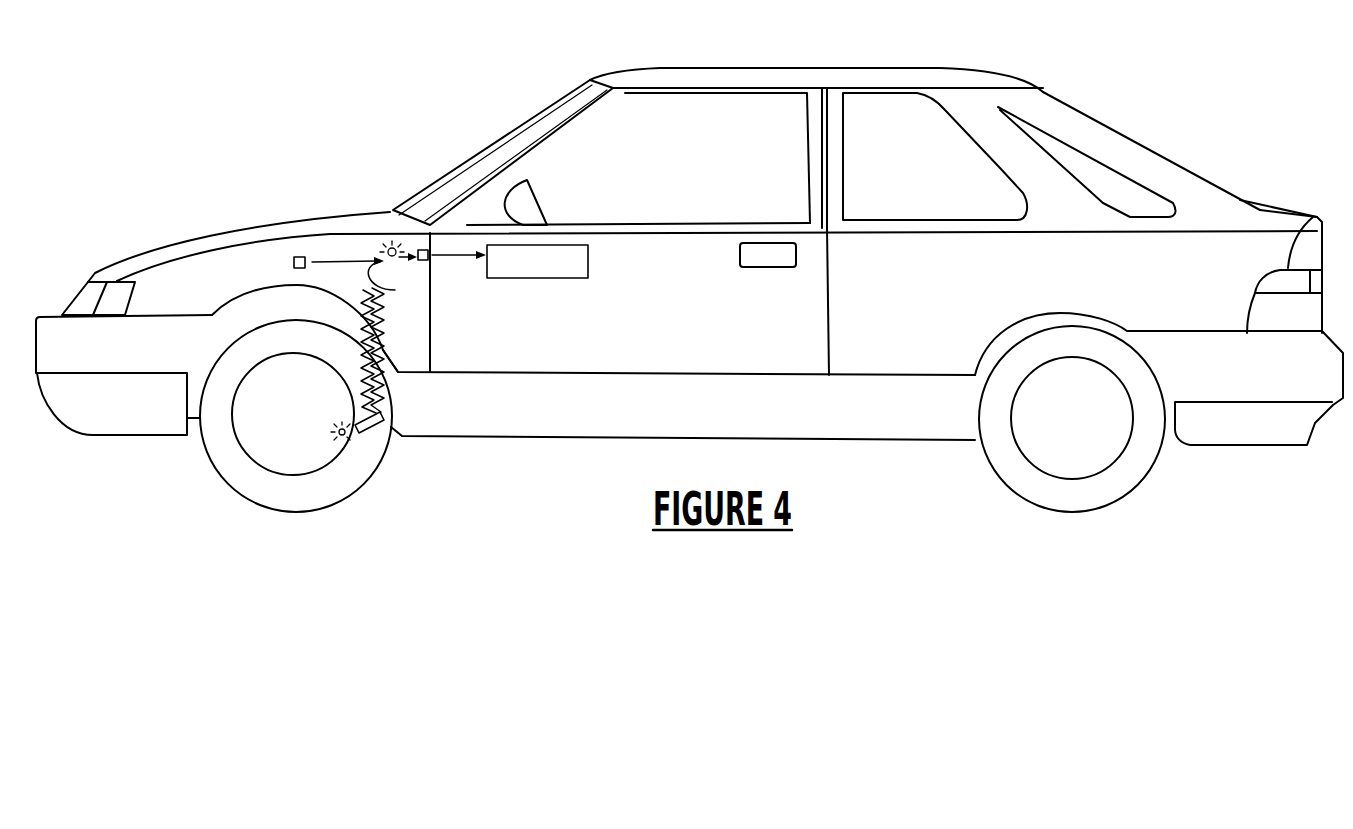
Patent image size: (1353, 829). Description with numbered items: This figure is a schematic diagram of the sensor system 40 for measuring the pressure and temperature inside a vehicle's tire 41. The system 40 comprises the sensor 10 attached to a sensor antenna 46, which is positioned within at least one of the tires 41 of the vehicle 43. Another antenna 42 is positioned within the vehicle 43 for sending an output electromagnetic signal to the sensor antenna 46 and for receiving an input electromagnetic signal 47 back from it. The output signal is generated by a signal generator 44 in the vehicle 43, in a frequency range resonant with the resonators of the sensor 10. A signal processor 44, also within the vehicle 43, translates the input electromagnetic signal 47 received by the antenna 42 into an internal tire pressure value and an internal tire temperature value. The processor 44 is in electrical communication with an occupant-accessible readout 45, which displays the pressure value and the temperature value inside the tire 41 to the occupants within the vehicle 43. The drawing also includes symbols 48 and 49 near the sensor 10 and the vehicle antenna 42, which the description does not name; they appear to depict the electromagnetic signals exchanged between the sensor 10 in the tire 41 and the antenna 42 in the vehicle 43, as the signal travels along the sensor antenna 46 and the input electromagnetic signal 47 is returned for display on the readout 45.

The sensor 10 is at (360, 432).
The system 40 is at (1148, 72).
The tire 41 is at (258, 488).
The antenna 42 is at (392, 264).
The vehicle 43 is at (1277, 222).
The signal generator and signal processor 44 is at (300, 257).
The occupant-accessible readout 45 is at (553, 279).
The sensor antenna 46 is at (360, 332).
The input electromagnetic signal 47 is at (384, 397).
The interrogation signal 48 is at (336, 425).
The RF response signal 49 is at (419, 251).